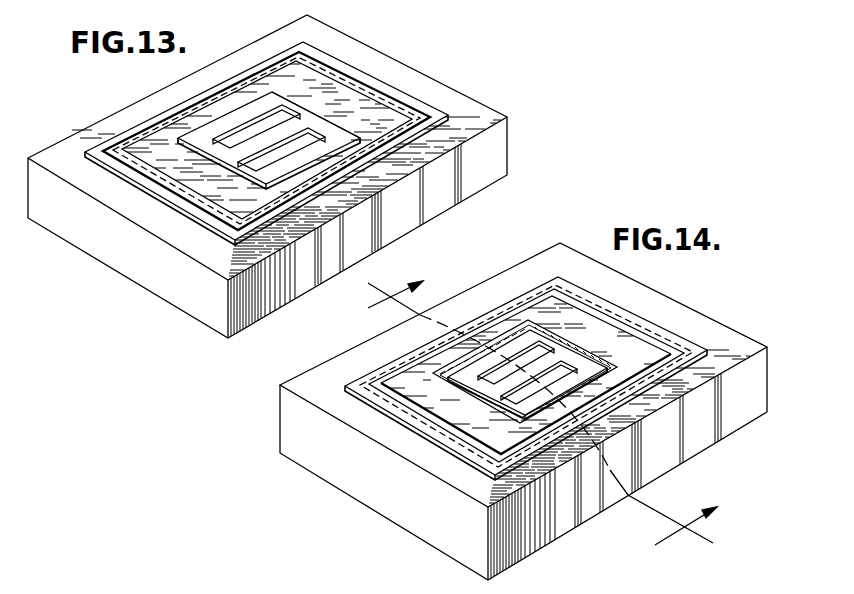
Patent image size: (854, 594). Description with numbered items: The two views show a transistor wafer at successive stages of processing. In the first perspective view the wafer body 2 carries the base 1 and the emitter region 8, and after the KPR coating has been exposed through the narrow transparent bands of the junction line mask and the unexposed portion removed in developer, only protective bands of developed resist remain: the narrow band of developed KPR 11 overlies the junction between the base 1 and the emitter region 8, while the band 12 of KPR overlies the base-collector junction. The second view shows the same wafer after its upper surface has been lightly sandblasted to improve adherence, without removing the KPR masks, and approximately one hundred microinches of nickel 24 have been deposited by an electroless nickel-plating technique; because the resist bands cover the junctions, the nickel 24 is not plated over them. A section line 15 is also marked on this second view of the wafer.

In FIG. 13, the base 1 is at (173, 173).
In FIG. 14, the base 1 is at (660, 347).
In FIG. 13, the base block 2 is at (134, 256).
In FIG. 14, the base block 2 is at (685, 350).
In FIG. 13, the emitter region 8 is at (246, 128).
In FIG. 14, the emitter region 8 is at (600, 373).
In FIG. 13, the narrow band of developed KPR 11 is at (287, 104).
In FIG. 13, the band of KPR 12 is at (349, 70).
In FIG. 14, the section line 15 is at (526, 425).
In FIG. 14, the nickel 24 is at (545, 347).